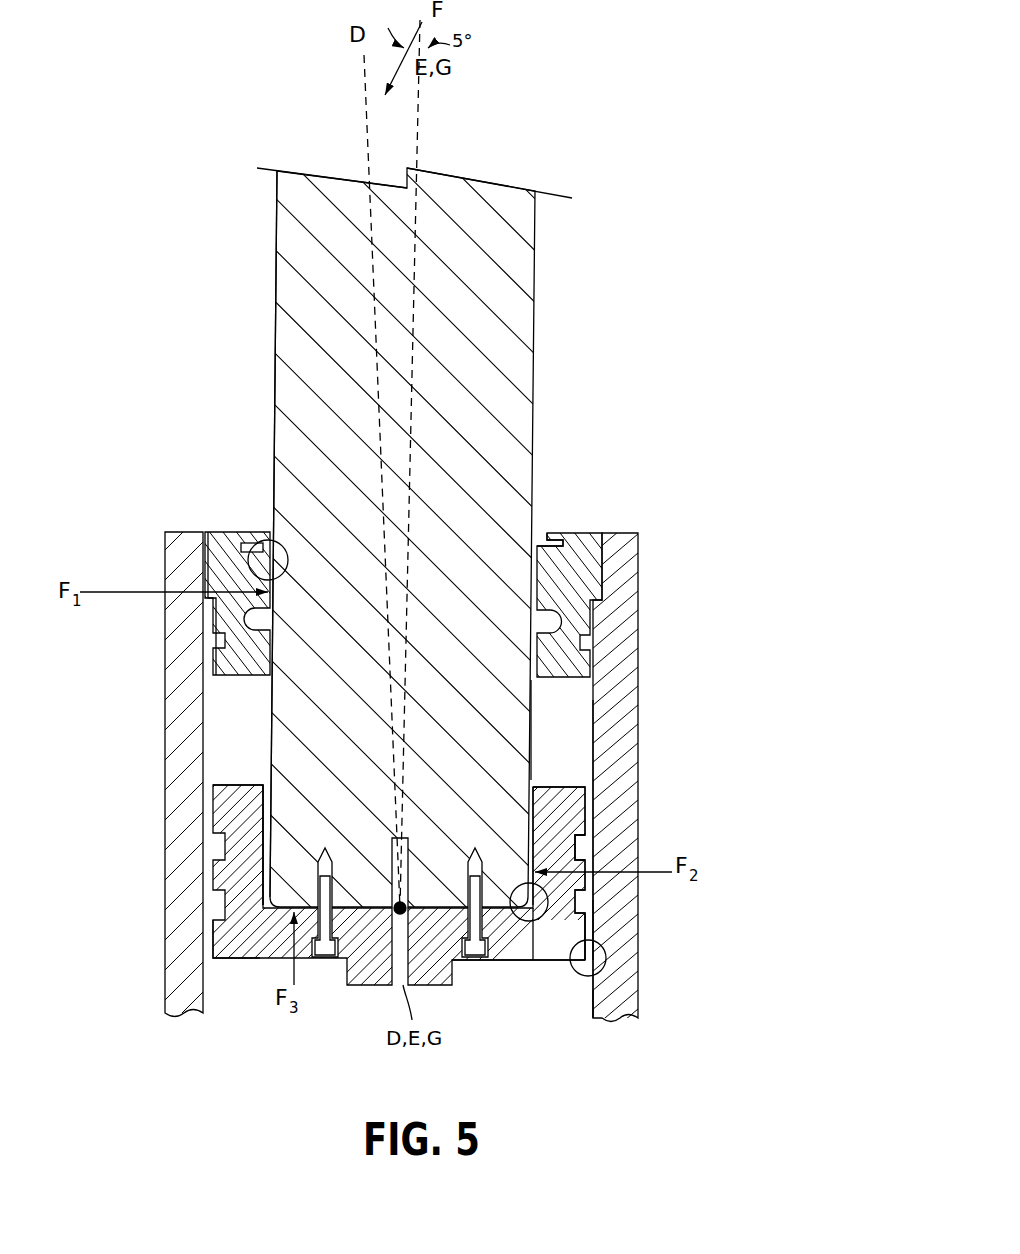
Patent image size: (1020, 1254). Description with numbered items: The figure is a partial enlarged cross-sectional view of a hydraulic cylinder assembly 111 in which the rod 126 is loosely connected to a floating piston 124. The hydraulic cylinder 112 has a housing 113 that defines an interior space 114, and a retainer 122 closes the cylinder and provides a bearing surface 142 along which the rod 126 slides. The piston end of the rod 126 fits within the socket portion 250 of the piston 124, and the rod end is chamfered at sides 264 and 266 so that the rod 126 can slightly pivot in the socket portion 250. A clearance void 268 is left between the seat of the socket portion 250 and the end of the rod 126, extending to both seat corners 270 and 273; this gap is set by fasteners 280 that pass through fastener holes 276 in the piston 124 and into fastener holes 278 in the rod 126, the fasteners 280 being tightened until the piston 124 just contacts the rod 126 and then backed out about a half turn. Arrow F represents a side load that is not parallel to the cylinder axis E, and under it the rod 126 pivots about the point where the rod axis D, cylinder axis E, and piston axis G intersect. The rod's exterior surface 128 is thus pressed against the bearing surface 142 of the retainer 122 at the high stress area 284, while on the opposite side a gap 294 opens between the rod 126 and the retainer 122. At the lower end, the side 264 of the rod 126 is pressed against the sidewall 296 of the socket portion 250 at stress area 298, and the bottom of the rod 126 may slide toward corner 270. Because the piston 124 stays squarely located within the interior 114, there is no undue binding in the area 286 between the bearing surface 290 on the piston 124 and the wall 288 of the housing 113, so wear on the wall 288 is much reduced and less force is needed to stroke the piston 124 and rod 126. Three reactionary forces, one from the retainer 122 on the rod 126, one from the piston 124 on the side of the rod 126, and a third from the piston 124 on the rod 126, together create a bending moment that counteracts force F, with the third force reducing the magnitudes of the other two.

The hydraulic cylinder assembly 111 is at (617, 236).
The hydraulic cylinder 112 is at (723, 786).
The housing 113 is at (617, 747).
The interior space 114 is at (557, 710).
The retainer 122 is at (203, 547).
The piston 124 is at (359, 880).
The rod 126 is at (510, 535).
The exterior surface 128 is at (273, 334).
The bearing surface 142 is at (230, 562).
The socket portion 250 is at (537, 786).
The side 264 is at (512, 912).
The side 266 is at (262, 902).
The clearance void 268 is at (548, 935).
The seat corner 270 is at (567, 940).
The seat corner 273 is at (220, 960).
The fastener holes 276 is at (306, 960).
The fastener holes 278 is at (322, 852).
The fasteners 280 is at (325, 960).
The high stress area 284 is at (262, 545).
The area 286 is at (607, 958).
The wall 288 is at (586, 996).
The bearing surface 290 is at (632, 928).
The gap 294 is at (541, 541).
The sidewall 296 is at (580, 852).
The stress area 298 is at (546, 890).